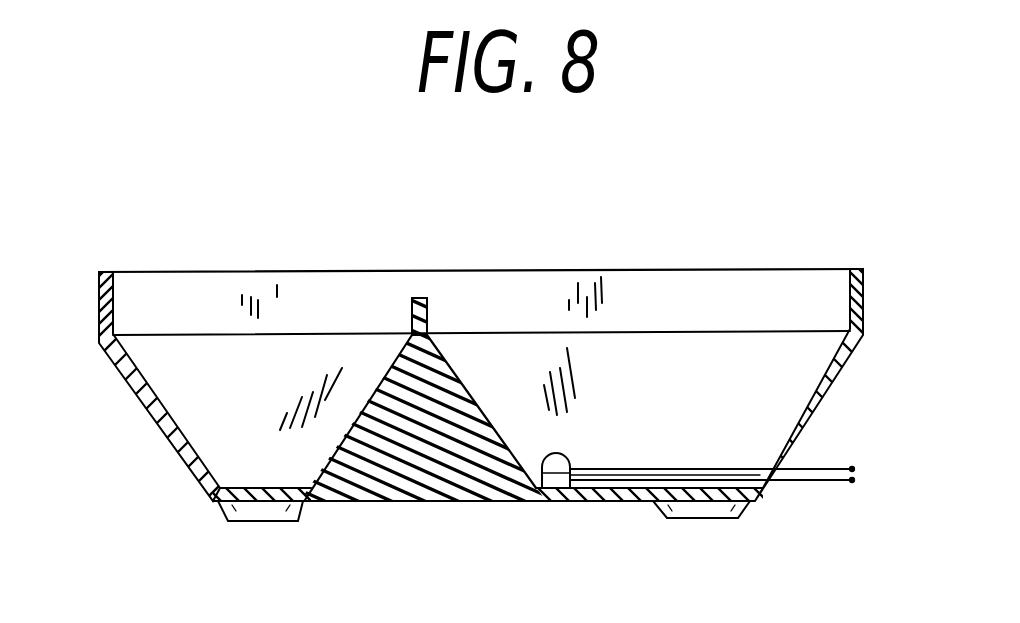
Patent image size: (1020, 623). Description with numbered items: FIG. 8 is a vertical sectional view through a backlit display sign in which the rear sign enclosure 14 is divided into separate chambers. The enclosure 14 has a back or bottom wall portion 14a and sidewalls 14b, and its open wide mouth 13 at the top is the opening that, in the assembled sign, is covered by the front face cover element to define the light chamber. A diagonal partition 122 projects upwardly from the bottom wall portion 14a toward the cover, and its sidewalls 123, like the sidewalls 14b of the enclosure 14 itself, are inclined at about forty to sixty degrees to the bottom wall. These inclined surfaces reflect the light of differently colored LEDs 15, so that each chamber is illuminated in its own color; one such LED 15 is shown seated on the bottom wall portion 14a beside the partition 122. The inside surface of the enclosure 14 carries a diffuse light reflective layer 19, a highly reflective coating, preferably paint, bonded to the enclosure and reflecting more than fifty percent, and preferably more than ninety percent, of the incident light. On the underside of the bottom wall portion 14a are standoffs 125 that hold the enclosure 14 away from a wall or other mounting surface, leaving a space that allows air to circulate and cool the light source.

The open wide mouth 13 is at (113, 290).
The rear sign enclosure element 14 is at (130, 462).
The bottom wall portion 14a is at (585, 500).
The sidewalls 14b is at (153, 422).
The LED 15 is at (567, 452).
The diffuse light reflective layer 19 is at (260, 488).
The diagonal partition 122 is at (417, 380).
The sidewalls of the partitions 123 is at (363, 407).
The standoffs 125 is at (258, 523).